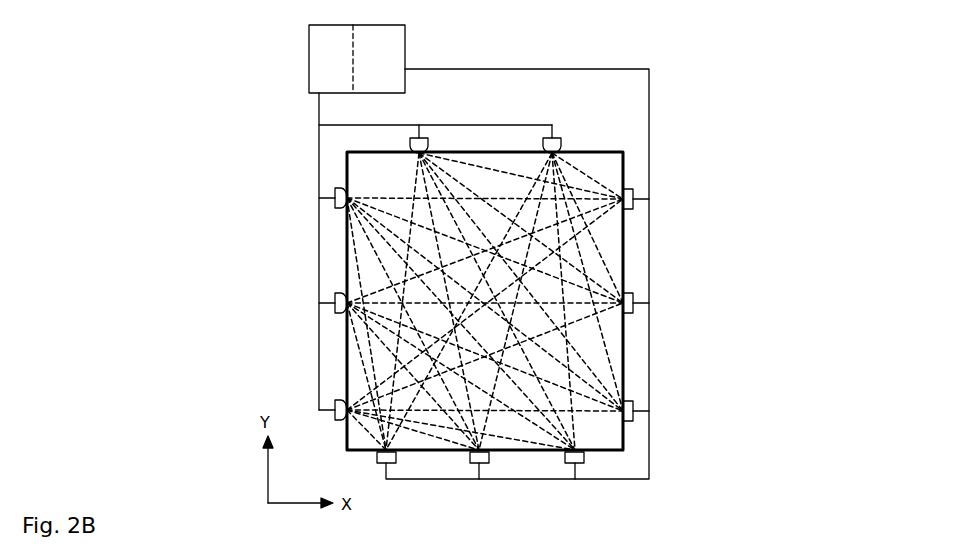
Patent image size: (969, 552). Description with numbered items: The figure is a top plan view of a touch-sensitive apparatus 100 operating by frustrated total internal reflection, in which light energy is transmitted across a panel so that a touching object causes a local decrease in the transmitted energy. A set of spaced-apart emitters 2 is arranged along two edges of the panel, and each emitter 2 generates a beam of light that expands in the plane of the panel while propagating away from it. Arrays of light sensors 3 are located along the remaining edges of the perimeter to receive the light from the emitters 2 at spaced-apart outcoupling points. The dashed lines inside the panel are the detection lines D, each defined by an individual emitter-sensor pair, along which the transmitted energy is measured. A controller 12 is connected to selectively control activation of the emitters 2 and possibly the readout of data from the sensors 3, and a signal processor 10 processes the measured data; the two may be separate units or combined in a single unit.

The touch-sensitive apparatus 100 is at (714, 77).
The signal processor 10 is at (393, 31).
The controller 12 is at (309, 42).
The emitters 2 is at (419, 137).
The sensors 3 is at (634, 411).
The detection lines D is at (588, 192).